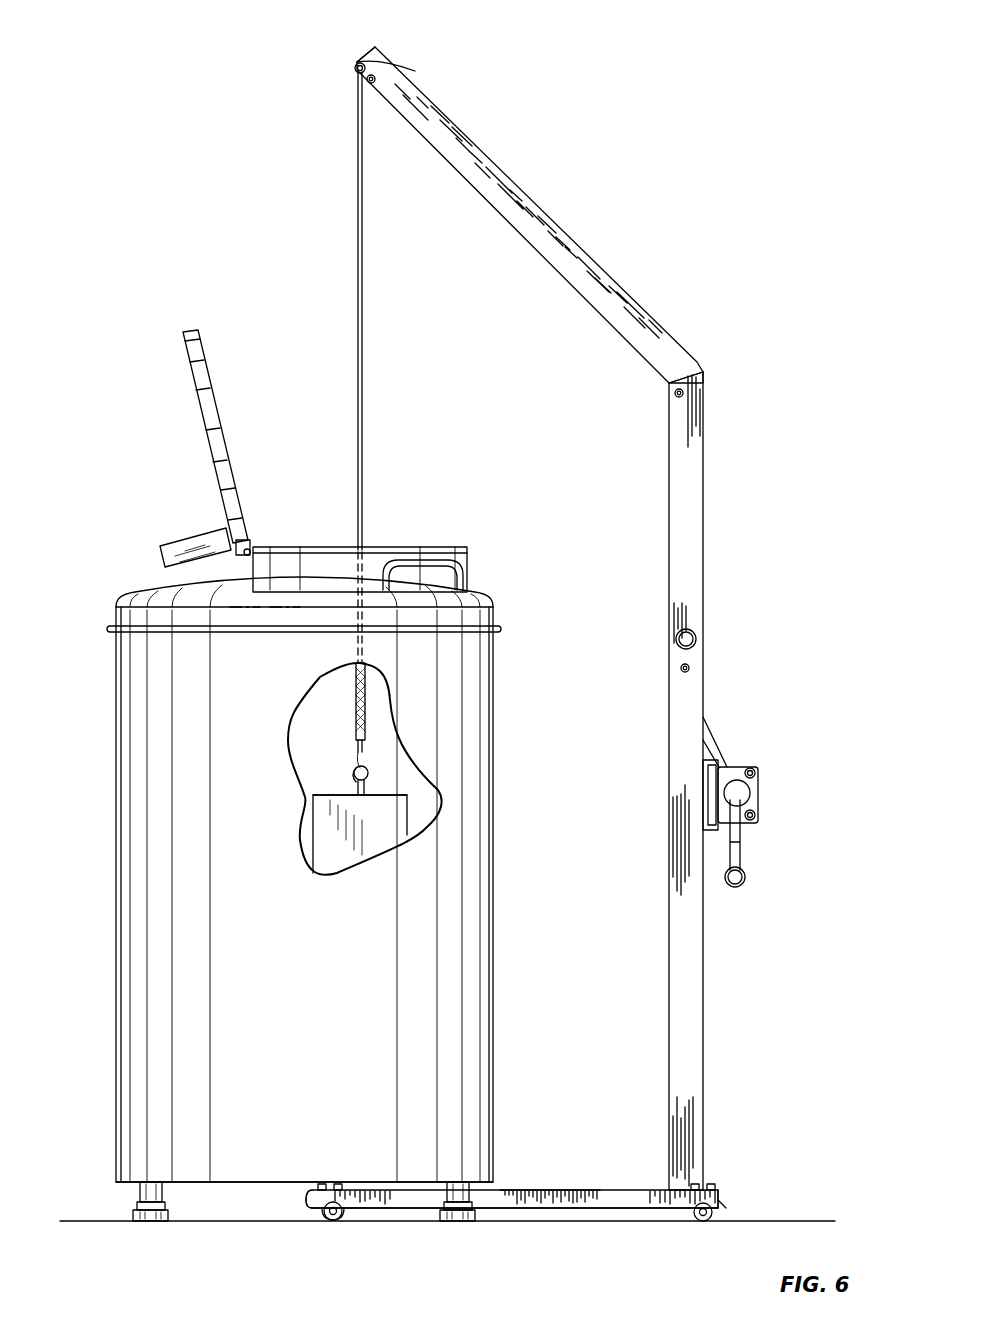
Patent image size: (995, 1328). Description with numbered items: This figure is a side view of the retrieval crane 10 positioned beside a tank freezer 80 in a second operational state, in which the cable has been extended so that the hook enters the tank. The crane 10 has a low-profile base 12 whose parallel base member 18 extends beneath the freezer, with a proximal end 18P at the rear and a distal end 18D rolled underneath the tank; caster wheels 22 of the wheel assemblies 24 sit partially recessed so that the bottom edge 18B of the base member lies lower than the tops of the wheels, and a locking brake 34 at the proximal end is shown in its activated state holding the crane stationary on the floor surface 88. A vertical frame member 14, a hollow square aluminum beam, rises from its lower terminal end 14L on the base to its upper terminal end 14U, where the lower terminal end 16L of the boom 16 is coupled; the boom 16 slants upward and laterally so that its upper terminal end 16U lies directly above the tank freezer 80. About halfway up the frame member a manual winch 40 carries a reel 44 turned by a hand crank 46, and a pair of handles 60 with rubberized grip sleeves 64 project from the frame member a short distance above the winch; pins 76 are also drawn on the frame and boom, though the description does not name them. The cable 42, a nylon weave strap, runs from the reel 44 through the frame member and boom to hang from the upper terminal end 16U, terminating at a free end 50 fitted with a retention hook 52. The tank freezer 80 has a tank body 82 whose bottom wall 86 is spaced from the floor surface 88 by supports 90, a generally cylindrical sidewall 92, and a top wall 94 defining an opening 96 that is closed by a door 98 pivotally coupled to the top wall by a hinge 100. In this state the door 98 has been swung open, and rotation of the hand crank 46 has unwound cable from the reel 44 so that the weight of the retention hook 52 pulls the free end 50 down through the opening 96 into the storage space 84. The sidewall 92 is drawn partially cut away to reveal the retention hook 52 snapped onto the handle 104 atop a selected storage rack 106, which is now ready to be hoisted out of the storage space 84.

The retrieval crane 10 is at (700, 193).
The base 12 is at (548, 1188).
The vertical frame member 14 is at (701, 549).
The upper terminal end 14U is at (705, 402).
The lower terminal end 14L is at (669, 1170).
The boom 16 is at (602, 266).
The upper terminal end 16U is at (375, 45).
The lower terminal end 16L is at (700, 362).
The parallel base member 18 is at (590, 1210).
The bottom edge 18B is at (546, 1209).
The distal end 18D is at (312, 1194).
The proximal end 18P is at (722, 1194).
The caster wheel 22 is at (320, 1216).
The wheel assembly 24 is at (344, 1217).
The locking brake 34 is at (735, 1207).
The manual winch 40 is at (755, 766).
The cable 42 is at (358, 236).
The reel 44 is at (744, 786).
The hand crank 46 is at (742, 864).
The free end 50 is at (355, 720).
The retention hook 52 is at (370, 772).
The handle 60 is at (692, 628).
The rubberized grip sleeve 64 is at (697, 639).
The pin 76 is at (376, 80).
The tank freezer 80 is at (123, 597).
The tank body 82 is at (497, 834).
The storage space 84 is at (360, 750).
The bottom wall 86 is at (114, 1180).
The floor surface 88 is at (210, 1222).
The support 90 is at (152, 1215).
The sidewall 92 is at (316, 946).
The top wall 94 is at (140, 598).
The opening 96 is at (432, 546).
The door 98 is at (200, 391).
The hinge 100 is at (242, 557).
The handle 104 is at (313, 792).
The storage rack 106 is at (345, 858).